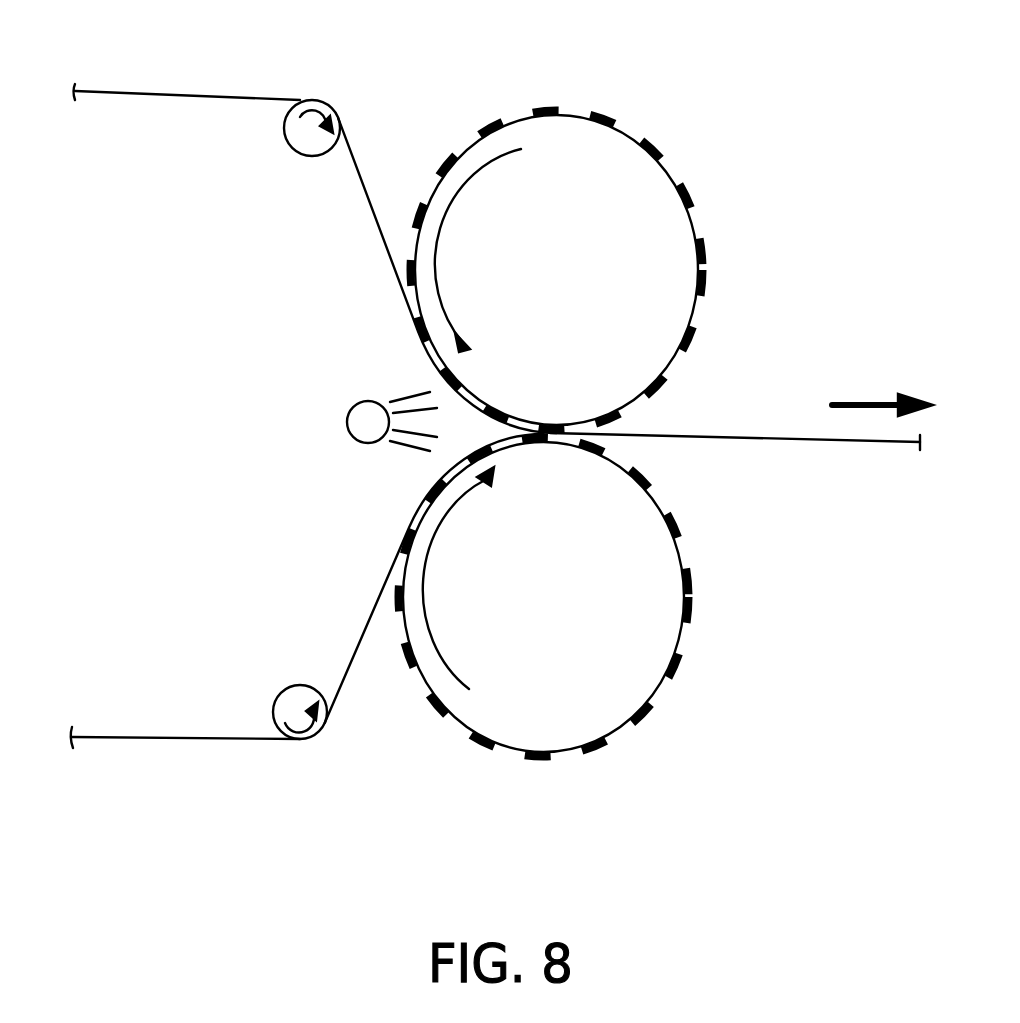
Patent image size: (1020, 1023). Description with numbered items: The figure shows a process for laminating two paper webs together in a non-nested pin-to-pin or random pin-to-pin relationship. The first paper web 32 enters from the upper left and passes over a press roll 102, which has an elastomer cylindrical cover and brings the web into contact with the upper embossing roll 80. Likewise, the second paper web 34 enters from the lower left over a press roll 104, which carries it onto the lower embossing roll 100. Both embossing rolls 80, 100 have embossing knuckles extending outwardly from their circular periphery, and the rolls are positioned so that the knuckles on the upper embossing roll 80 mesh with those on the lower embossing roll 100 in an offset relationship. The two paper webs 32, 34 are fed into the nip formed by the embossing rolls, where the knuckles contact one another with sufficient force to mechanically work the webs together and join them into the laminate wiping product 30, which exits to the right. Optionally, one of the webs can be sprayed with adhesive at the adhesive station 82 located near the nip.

The laminate wiping product 30 is at (757, 440).
The first paper web 32 is at (157, 92).
The second paper web 34 is at (180, 742).
The upper embossing roll 80 is at (657, 218).
The adhesive station 82 is at (352, 437).
The lower embossing roll 100 is at (652, 635).
The press roll 102 is at (312, 145).
The press roll 104 is at (300, 695).